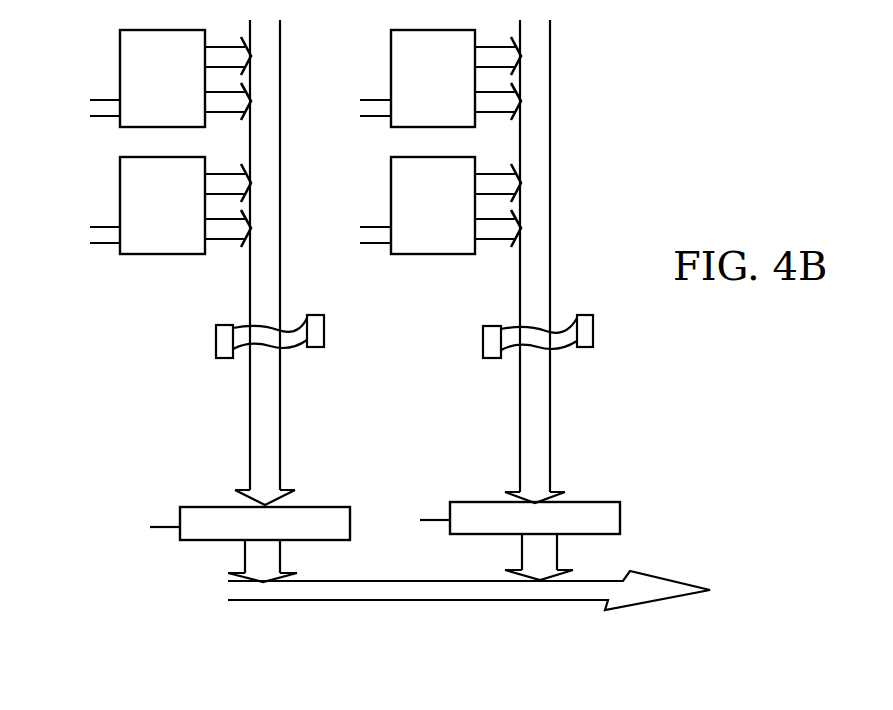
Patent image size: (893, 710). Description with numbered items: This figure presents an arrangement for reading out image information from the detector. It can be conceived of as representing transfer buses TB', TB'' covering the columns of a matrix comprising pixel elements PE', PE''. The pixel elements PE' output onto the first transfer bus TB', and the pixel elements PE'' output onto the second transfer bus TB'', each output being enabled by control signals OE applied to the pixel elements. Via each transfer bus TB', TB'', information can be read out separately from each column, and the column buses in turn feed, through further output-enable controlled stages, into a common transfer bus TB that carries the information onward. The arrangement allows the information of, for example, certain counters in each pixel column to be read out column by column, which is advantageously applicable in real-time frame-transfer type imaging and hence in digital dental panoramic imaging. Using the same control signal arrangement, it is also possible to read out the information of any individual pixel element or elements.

The pixel element PE' is at (147, 142).
The pixel element PE'' is at (417, 142).
The transfer bus TB' is at (259, 301).
The transfer bus TB'' is at (533, 300).
The transfer bus TB is at (469, 617).